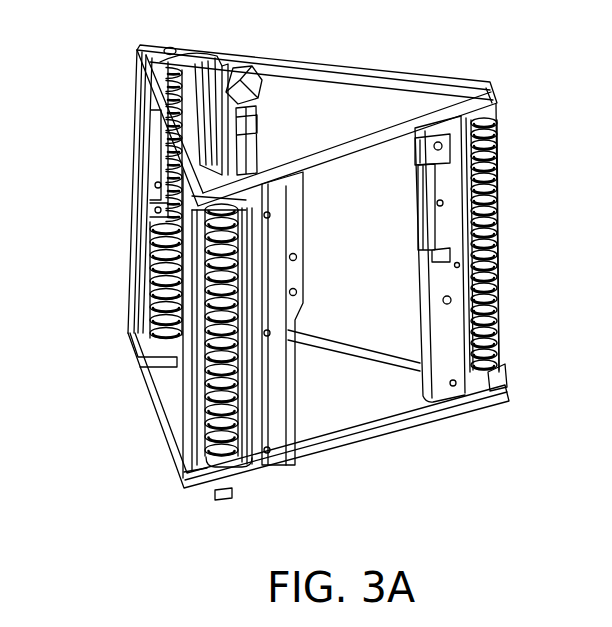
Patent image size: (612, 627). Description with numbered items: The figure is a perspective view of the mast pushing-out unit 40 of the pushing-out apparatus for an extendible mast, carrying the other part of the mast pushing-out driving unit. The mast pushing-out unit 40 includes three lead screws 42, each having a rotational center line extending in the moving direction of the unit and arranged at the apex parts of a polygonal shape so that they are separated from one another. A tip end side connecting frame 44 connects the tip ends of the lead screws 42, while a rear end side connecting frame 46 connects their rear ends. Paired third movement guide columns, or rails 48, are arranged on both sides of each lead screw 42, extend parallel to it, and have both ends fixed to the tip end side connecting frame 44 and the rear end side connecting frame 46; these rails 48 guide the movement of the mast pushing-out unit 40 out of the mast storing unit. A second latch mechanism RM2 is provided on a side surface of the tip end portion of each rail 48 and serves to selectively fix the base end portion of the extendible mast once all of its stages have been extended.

The mast pushing-out unit 40 is at (112, 130).
The lead screw 42 is at (190, 60).
The tip end side connecting frame 44 is at (341, 70).
The rear end side connecting frame 46 is at (365, 443).
The third movement guide column (rail) 48 is at (221, 73).
The second latch mechanism RM2 is at (263, 127).